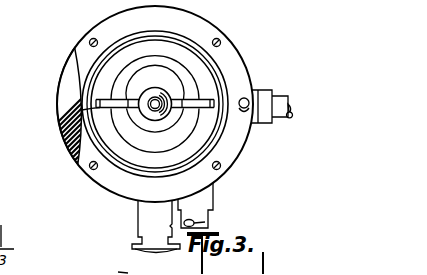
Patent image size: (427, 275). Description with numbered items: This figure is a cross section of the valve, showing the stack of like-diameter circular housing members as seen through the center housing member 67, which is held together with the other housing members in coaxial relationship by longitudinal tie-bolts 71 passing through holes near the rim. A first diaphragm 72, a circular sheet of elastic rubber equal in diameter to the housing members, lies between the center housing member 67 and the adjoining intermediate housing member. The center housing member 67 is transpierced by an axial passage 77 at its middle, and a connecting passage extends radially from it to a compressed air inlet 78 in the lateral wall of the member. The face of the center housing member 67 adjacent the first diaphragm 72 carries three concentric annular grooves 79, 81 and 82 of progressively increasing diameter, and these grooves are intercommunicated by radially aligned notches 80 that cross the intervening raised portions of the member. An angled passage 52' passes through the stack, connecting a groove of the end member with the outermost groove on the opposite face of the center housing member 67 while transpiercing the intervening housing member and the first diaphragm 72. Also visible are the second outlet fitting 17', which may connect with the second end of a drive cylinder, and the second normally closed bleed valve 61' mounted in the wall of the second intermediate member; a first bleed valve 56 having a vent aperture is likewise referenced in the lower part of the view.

The center housing member 67 is at (211, 24).
The longitudinal tie-bolts 71 is at (222, 43).
The first diaphragm 72 is at (65, 64).
The angled passage 52' is at (61, 116).
The radially aligned notches 80 is at (128, 108).
The annular groove 79 is at (165, 84).
The axial passage 77 is at (157, 112).
The annular groove 81 is at (142, 145).
The annular groove 82 is at (215, 139).
The compressed air inlet 78 is at (247, 112).
The second outlet fitting 17' is at (211, 205).
The second normally closed bleed valve 61' is at (138, 227).
The base member 56 is at (113, 272).